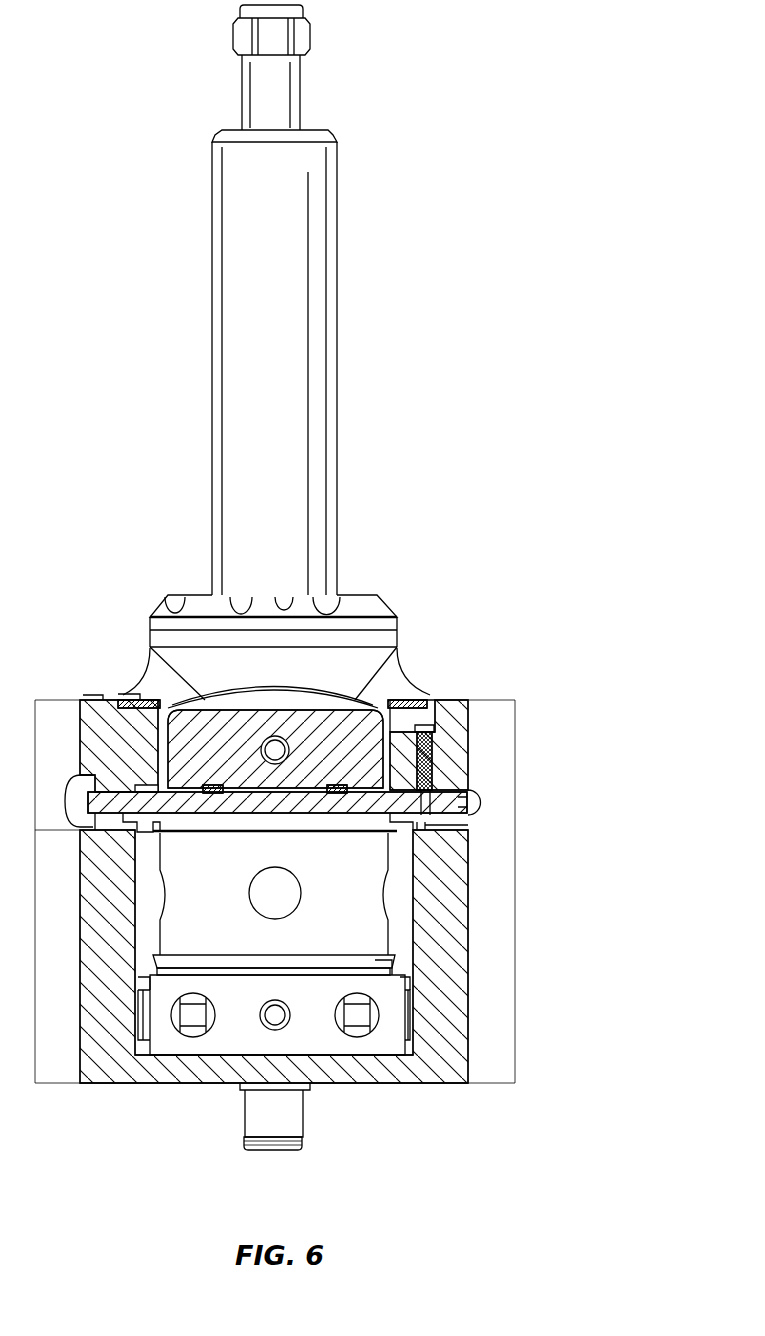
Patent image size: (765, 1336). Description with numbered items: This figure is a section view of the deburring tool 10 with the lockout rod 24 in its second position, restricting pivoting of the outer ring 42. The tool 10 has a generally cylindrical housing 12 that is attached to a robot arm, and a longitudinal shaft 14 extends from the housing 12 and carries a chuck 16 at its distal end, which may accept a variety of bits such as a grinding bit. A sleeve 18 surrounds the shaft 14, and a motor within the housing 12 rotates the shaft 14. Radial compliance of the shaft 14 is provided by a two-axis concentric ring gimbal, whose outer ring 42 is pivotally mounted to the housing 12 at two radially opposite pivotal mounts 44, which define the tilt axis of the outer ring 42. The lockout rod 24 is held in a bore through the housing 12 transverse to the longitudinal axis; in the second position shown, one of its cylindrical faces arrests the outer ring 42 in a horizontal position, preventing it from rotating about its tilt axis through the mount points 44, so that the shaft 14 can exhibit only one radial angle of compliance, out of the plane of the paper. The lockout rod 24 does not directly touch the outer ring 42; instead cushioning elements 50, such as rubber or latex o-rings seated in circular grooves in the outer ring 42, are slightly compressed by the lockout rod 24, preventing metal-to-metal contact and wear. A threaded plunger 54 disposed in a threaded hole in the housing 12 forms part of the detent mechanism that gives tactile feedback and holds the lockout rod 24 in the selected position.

The deburring tool 10 is at (460, 418).
The housing 12 is at (515, 1010).
The longitudinal shaft 14 is at (272, 92).
The chuck 16 is at (303, 30).
The sleeve 18 is at (312, 277).
The lockout rod 24 is at (482, 800).
The outer ring 42 is at (330, 727).
The pivotal mounts 44 is at (262, 742).
The cushioning elements 50 is at (415, 700).
The threaded plunger 54 is at (432, 760).